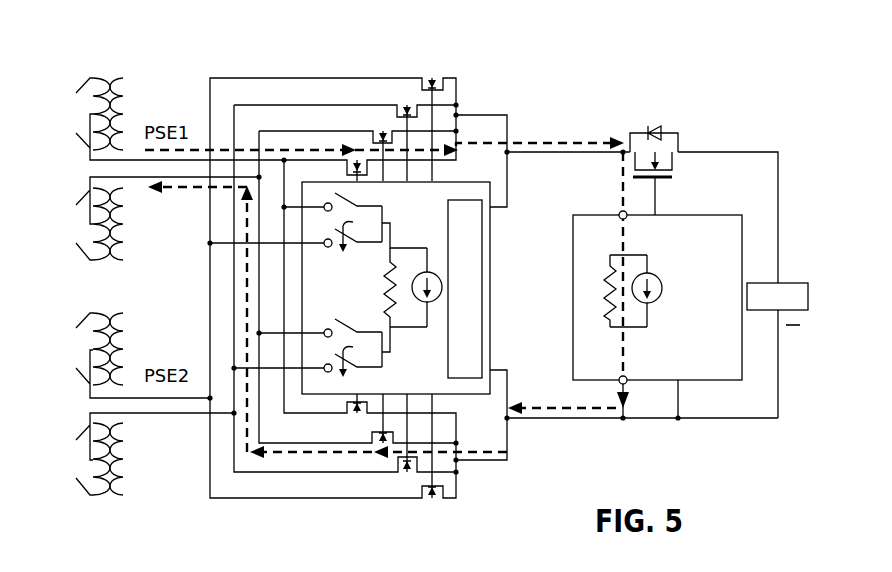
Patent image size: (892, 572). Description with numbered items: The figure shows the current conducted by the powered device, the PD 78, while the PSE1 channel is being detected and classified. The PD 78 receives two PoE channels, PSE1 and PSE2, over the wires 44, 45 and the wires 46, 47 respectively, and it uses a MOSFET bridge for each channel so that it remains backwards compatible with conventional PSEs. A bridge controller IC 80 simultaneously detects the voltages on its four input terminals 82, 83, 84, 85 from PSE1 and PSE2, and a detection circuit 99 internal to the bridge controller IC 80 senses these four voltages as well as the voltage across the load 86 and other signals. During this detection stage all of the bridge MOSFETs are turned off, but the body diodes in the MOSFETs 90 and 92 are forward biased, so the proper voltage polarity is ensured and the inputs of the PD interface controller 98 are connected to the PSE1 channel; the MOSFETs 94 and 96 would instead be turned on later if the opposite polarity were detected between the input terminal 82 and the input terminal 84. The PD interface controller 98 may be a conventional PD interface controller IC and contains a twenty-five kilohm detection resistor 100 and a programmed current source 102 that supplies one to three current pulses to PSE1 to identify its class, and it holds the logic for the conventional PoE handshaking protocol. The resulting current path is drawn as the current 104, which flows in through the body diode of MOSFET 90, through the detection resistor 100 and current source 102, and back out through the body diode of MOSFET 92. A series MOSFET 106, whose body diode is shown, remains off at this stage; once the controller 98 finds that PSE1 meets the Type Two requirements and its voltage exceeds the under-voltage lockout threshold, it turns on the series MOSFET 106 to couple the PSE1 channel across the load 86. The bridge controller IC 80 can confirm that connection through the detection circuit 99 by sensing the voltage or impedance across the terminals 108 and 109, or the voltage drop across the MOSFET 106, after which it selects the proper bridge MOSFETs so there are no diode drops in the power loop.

The wire 44 is at (80, 105).
The wire 45 is at (80, 225).
The wire 46 is at (80, 346).
The wire 47 is at (80, 466).
The PD 78 is at (256, 53).
The bridge controller IC 80 is at (492, 290).
The input terminal 82 is at (347, 202).
The input terminal 83 is at (327, 247).
The input terminal 84 is at (327, 329).
The input terminal 85 is at (325, 372).
The load 86 is at (762, 283).
The MOSFET 90 is at (347, 168).
The MOSFET 92 is at (372, 440).
The MOSFET 94 is at (347, 408).
The MOSFET 96 is at (372, 135).
The PD interface controller 98 is at (737, 214).
The detection circuit 99 is at (474, 300).
The detection resistor 100 is at (606, 276).
The programmed current source 102 is at (664, 287).
The current 104 is at (561, 144).
The series MOSFET 106 is at (675, 168).
The terminal 108 is at (507, 184).
The terminal 109 is at (509, 388).